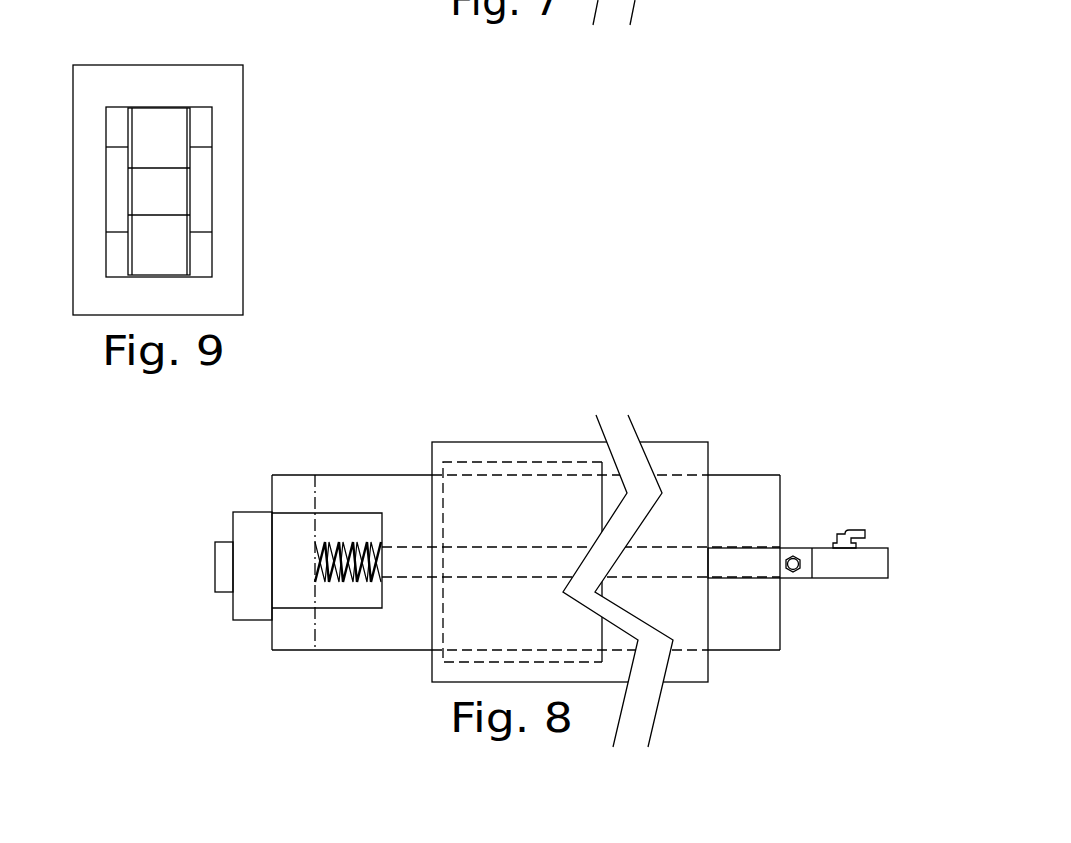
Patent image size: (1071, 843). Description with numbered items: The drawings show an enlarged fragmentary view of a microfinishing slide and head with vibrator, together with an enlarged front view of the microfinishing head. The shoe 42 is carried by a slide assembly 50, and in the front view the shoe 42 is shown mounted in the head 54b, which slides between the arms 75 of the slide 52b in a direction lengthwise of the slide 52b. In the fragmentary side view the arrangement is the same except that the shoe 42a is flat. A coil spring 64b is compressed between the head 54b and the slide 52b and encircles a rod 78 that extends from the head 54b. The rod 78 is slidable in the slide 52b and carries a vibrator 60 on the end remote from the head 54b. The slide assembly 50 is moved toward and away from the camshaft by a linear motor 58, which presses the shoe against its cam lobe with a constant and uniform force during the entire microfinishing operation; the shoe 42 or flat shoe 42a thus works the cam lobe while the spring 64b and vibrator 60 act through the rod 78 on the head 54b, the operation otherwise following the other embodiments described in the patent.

In FIG. 9, the slide assembly 50 is at (252, 55).
In FIG. 8, the slide assembly 50 is at (568, 385).
In FIG. 9, the arms 75 is at (207, 128).
In FIG. 8, the arms 75 is at (395, 640).
In FIG. 9, the microfinishing shoe 42 is at (168, 190).
In FIG. 8, the flat shoe 42a is at (215, 563).
In FIG. 8, the slide 52b is at (744, 477).
In FIG. 8, the head 54b is at (247, 610).
In FIG. 8, the linear motor 58 is at (458, 462).
In FIG. 8, the vibrator 60 is at (867, 558).
In FIG. 8, the coil spring 64b is at (347, 547).
In FIG. 8, the rod 78 is at (418, 547).